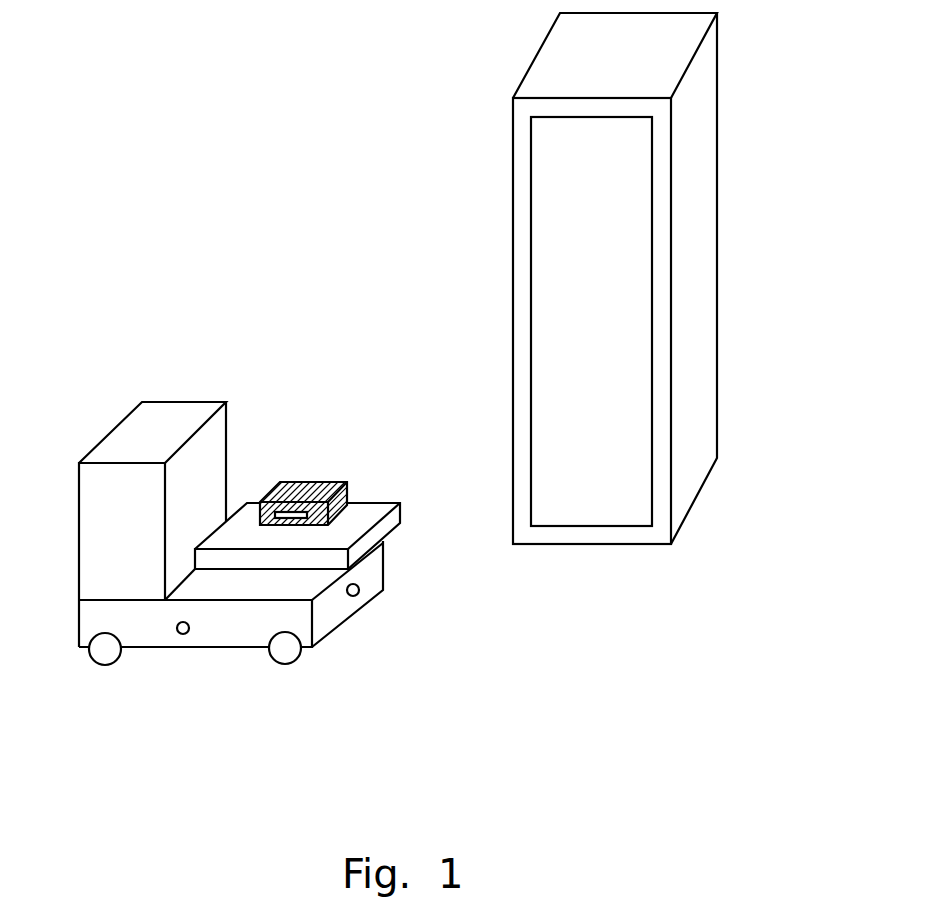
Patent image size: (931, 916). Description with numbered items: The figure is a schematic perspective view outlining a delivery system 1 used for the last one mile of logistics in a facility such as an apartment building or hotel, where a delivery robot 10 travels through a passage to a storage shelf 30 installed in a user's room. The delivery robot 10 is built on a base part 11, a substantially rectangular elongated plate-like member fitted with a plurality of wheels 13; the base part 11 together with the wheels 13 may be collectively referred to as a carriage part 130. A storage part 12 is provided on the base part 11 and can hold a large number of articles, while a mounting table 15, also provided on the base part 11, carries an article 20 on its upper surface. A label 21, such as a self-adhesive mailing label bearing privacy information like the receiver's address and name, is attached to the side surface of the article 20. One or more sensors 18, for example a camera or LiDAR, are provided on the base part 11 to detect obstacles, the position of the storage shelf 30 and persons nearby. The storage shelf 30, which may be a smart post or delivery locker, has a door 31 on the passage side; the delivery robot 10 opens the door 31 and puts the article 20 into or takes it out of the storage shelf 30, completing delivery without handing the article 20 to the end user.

The delivery system 1 is at (61, 26).
The delivery robot 10 is at (274, 436).
The base part 11 is at (291, 627).
The storage part 12 is at (153, 407).
The wheels 13 is at (103, 667).
The mounting table 15 is at (370, 505).
The sensors 18 is at (178, 636).
The article 20 is at (333, 480).
The label 21 is at (338, 517).
The storage shelf 30 is at (643, 330).
The door 31 is at (625, 511).
The carriage part 130 is at (402, 574).